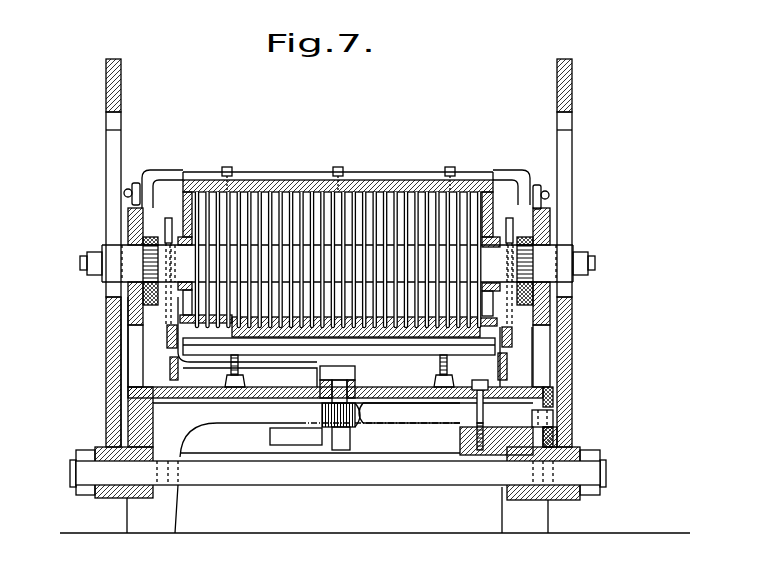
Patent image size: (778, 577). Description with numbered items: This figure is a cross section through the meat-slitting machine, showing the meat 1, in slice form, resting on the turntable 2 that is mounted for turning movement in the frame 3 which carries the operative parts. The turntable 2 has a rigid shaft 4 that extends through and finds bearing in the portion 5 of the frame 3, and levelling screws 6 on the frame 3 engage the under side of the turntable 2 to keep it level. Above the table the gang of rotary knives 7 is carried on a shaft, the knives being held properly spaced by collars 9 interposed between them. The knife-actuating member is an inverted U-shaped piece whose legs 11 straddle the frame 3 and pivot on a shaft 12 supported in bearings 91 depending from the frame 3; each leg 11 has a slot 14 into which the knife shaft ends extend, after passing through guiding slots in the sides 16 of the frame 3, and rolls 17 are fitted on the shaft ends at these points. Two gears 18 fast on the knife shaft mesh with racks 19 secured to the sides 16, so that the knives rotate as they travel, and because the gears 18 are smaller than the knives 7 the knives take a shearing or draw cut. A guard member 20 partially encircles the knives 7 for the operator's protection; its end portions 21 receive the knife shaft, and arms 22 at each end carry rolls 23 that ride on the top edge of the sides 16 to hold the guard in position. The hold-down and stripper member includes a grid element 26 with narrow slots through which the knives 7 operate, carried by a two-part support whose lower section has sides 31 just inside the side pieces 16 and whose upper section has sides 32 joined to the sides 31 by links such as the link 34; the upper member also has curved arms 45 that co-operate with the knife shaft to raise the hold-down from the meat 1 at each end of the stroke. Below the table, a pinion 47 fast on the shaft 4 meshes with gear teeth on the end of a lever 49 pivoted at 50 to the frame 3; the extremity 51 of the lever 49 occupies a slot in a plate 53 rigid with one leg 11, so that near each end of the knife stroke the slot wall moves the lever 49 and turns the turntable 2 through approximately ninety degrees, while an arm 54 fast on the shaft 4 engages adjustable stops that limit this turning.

The meat 1 is at (295, 338).
The turntable 2 is at (217, 342).
The frame 3 is at (137, 400).
The shaft 4 is at (355, 407).
The portion of the frame 5 is at (293, 402).
The levelling screws 6 is at (240, 372).
The rotary knives 7 is at (385, 198).
The collars 9 is at (261, 250).
The legs 11 is at (118, 370).
The shaft 12 is at (427, 473).
The slot 14 is at (112, 137).
The sides 16 is at (133, 215).
The rolls 17 is at (127, 258).
The gears 18 is at (153, 237).
The racks 19 is at (150, 298).
The guard member 20 is at (307, 178).
The end portions 21 is at (185, 200).
The arms 22 is at (493, 177).
The rolls 23 is at (133, 186).
The grid element 26 is at (493, 318).
The sides 31 is at (172, 372).
The sides 32 is at (170, 337).
The link 34 is at (172, 358).
The curved arms 45 is at (137, 205).
The pinion 47 is at (338, 420).
The lever 49 is at (400, 417).
The pivot 50 is at (477, 400).
The extremity 51 is at (553, 420).
The plate 53 is at (556, 408).
The arm 54 is at (297, 440).
The bearings 91 is at (142, 448).